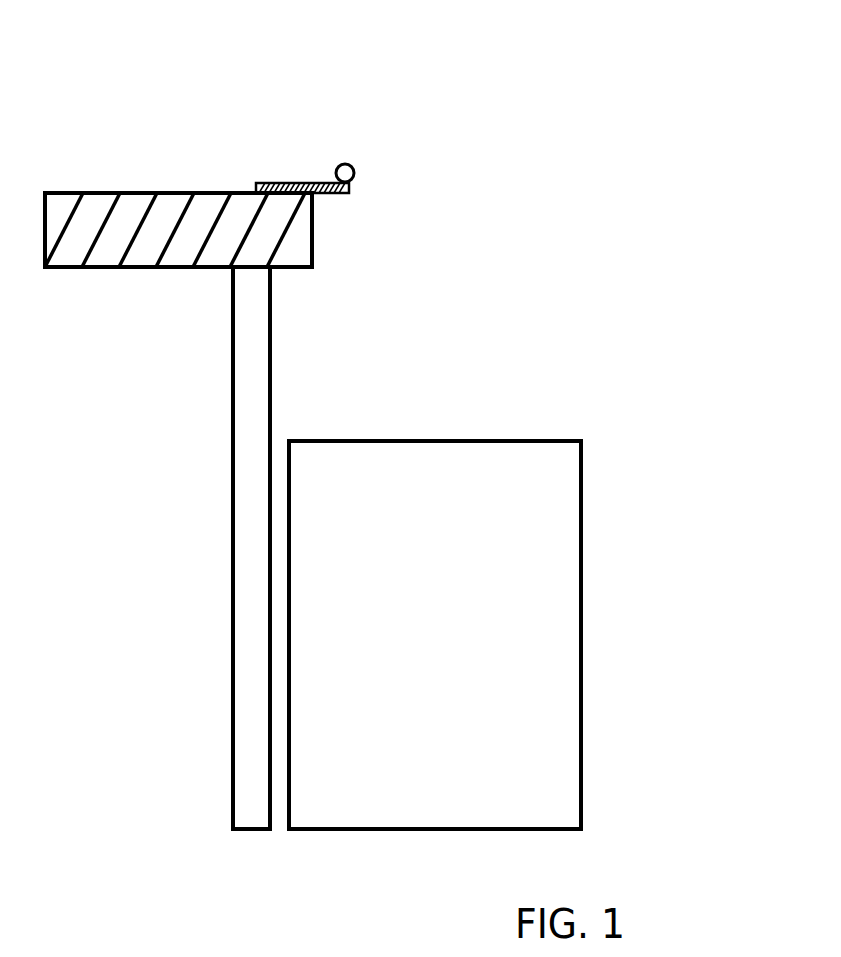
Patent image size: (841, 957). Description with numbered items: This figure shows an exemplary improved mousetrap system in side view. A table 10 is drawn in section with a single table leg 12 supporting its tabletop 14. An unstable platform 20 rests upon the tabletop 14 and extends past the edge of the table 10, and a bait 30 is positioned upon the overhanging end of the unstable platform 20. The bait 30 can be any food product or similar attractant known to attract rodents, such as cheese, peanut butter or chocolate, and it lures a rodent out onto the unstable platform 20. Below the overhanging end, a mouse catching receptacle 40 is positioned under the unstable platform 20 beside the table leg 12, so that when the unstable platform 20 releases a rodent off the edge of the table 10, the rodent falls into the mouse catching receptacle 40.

The table 10 is at (302, 238).
The table leg 12 is at (238, 300).
The tabletop 14 is at (180, 192).
The unstable platform 20 is at (302, 180).
The bait 30 is at (355, 165).
The mouse catching receptacle 40 is at (581, 510).